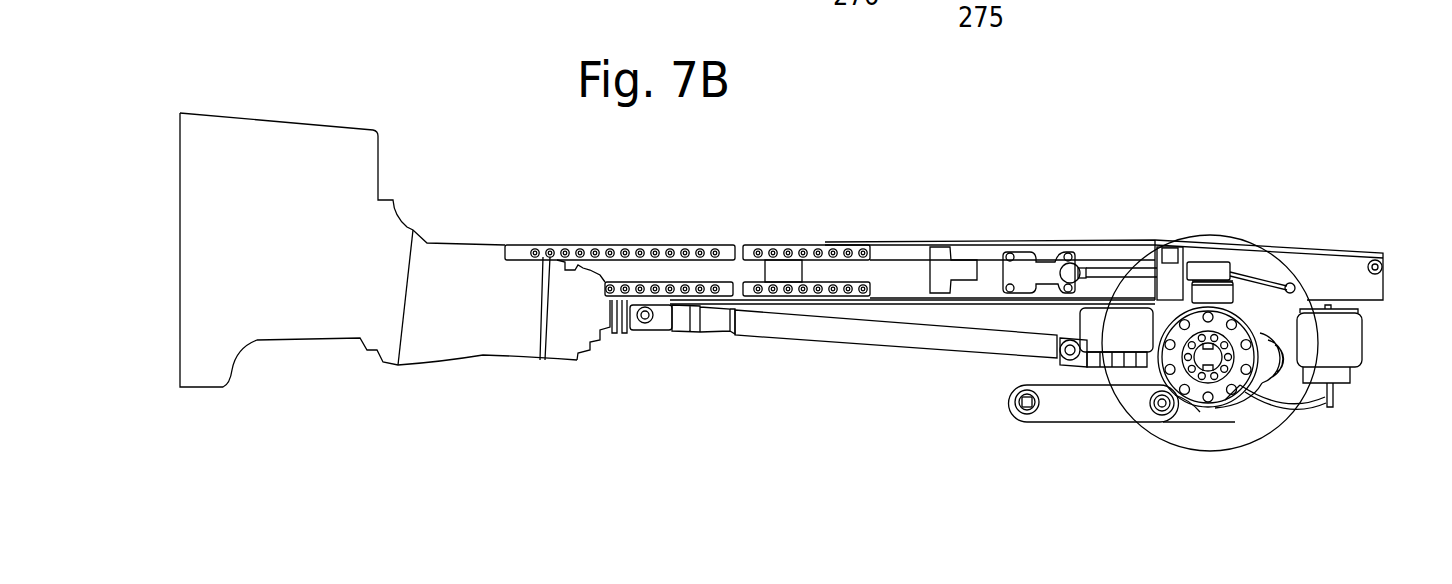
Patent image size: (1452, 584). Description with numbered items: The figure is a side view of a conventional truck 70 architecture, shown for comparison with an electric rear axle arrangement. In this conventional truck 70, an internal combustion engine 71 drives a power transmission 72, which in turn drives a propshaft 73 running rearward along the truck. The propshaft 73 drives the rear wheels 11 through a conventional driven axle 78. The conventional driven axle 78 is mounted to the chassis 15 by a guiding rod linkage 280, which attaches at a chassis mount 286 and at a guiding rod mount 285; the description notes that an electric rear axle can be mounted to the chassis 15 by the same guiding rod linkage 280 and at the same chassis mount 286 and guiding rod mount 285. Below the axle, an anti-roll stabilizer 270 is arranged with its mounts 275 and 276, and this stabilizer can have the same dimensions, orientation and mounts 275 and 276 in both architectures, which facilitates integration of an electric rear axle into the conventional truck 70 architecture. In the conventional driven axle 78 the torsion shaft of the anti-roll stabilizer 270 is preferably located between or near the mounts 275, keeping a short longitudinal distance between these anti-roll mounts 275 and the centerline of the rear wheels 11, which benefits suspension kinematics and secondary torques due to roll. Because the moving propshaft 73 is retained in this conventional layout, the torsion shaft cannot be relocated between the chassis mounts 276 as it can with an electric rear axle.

The conventional truck 70 is at (209, 97).
The internal combustion engine 71 is at (340, 213).
The power transmission 72 is at (483, 267).
The chassis 15 is at (810, 243).
The propshaft 73 is at (817, 337).
The chassis mount 286 is at (1070, 270).
The guiding rod linkage 280 is at (1115, 273).
The rear wheels 11 is at (1203, 245).
The guiding rod mount 285 is at (1217, 260).
The anti-roll stabilizer 270 is at (1087, 407).
The anti-roll stabilizer mount 276 is at (1017, 400).
The anti-roll stabilizer mount 275 is at (1167, 413).
The conventional driven axle 78 is at (1287, 442).